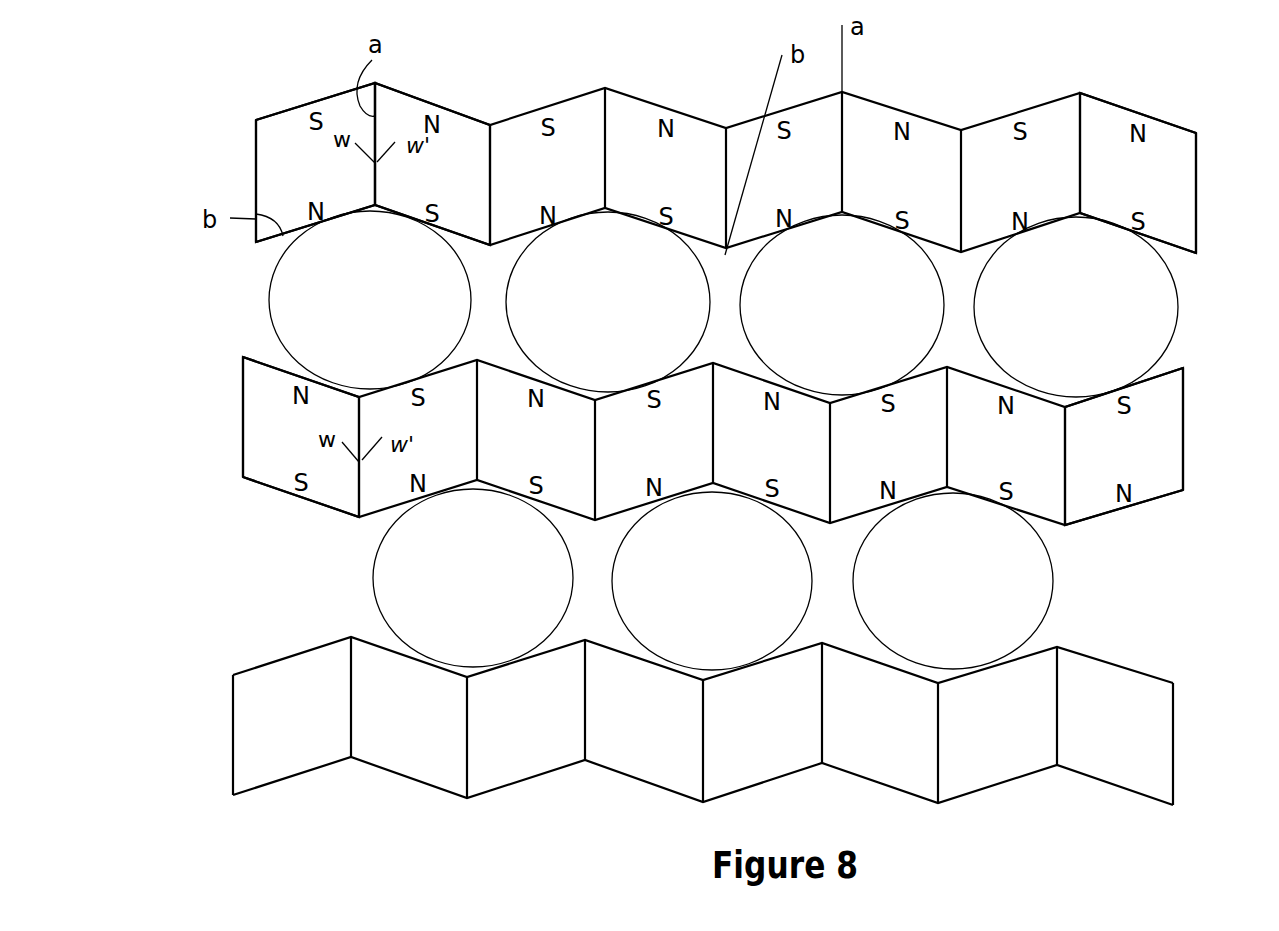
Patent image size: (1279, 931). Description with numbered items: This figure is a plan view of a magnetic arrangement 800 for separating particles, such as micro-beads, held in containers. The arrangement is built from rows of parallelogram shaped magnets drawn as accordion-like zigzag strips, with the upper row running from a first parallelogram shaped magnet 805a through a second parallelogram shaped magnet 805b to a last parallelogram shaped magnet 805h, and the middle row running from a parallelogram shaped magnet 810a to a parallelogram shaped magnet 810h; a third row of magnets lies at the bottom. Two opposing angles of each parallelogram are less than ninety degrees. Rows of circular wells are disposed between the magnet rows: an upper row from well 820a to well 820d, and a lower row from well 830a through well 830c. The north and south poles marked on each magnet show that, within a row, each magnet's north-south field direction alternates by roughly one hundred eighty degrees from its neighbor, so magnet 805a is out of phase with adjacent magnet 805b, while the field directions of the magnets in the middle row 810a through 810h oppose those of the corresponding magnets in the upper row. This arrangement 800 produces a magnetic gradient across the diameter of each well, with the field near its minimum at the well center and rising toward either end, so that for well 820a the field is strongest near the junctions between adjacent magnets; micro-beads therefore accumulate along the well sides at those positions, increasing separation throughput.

The magnetic arrangement 800 is at (703, 745).
The parallelogram shaped magnet 805a is at (276, 123).
The parallelogram shaped magnet 805b is at (453, 123).
The parallelogram shaped magnet 805h is at (1122, 102).
The parallelogram shaped magnet 810a is at (242, 420).
The parallelogram shaped magnet 810h is at (1183, 413).
The well 820a is at (269, 302).
The well 820d is at (1178, 308).
The well 830a is at (373, 593).
The well 830c is at (1055, 583).